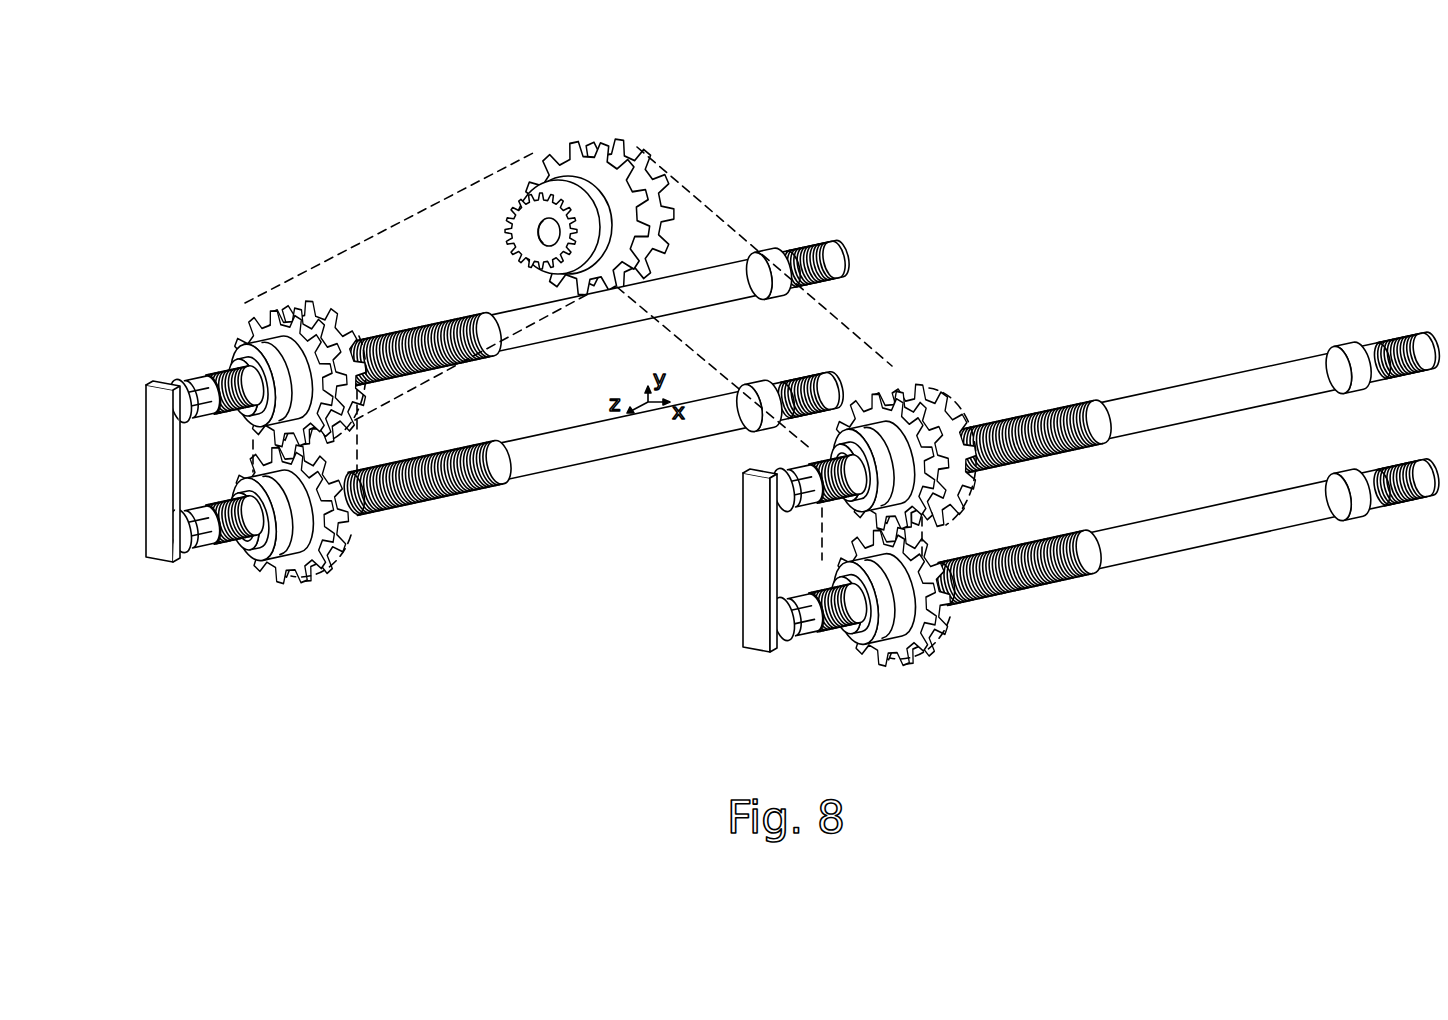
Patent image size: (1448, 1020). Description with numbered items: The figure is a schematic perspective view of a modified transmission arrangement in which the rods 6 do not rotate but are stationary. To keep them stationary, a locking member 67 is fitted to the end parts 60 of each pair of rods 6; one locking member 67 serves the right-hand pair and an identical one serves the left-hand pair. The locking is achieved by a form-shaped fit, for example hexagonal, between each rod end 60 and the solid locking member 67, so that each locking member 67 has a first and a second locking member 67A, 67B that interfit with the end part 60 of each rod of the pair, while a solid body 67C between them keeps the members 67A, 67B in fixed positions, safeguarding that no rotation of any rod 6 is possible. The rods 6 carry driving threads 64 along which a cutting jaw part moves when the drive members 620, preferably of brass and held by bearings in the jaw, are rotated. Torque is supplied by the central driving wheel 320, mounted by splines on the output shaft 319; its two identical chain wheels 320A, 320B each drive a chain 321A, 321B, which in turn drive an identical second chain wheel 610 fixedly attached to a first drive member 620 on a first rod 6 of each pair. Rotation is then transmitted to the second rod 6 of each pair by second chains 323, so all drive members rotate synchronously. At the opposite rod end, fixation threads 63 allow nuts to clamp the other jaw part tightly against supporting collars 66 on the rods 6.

The rod 6 is at (1175, 378).
The end part of rod 60 is at (197, 383).
The fixation threads 63 is at (807, 243).
The driving threads 64 is at (393, 317).
The supporting collar 66 is at (750, 252).
The locking member 67 is at (701, 601).
The first locking member 67A is at (776, 645).
The second locking member 67B is at (756, 482).
The solid body 67C is at (740, 638).
The output shaft 319 is at (502, 248).
The central driving wheel 320 is at (604, 193).
The chain wheel 320A is at (543, 158).
The chain wheel 320B is at (635, 148).
The chain 321A is at (422, 217).
The chain 321B is at (896, 352).
The second chain 323 is at (253, 463).
The second chain wheel 610 is at (268, 338).
The drive member 620 is at (232, 352).